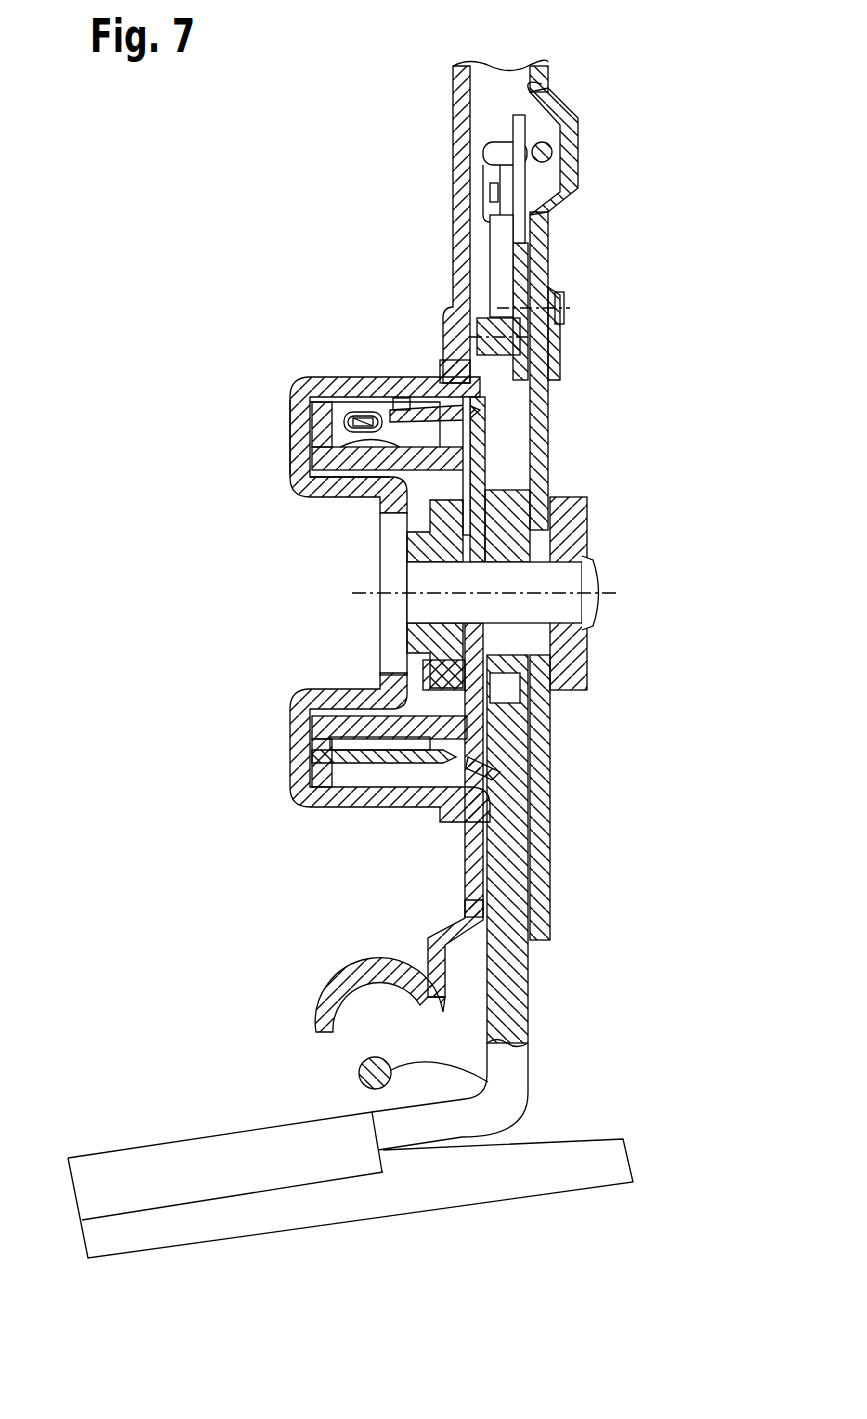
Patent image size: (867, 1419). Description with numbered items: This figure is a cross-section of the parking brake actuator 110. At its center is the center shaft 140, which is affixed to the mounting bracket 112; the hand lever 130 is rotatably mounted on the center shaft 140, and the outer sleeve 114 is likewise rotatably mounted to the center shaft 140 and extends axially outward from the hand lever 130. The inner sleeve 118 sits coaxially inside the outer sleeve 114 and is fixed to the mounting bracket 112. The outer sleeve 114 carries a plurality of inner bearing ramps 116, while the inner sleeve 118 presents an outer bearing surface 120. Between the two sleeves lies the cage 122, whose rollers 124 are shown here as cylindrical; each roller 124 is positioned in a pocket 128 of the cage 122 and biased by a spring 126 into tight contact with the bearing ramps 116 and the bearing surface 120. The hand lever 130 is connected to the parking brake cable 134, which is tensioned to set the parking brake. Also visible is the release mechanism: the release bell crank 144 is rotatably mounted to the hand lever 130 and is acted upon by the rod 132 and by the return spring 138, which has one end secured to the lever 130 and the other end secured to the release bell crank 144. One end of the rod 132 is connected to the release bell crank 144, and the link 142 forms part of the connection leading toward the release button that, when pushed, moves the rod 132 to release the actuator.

The parking brake actuator 110 is at (238, 698).
The mounting bracket 112 is at (160, 1172).
The outer sleeve 114 is at (333, 490).
The inner bearing ramps 116 is at (400, 405).
The inner sleeve 118 is at (318, 443).
The outer bearing surface 120 is at (318, 488).
The cage 122 is at (350, 757).
The rollers 124 is at (330, 392).
The spring 126 is at (357, 410).
The pocket 128 is at (340, 410).
The hand lever 130 is at (458, 216).
The rod 132 is at (556, 146).
The parking brake cable 134 is at (523, 1082).
The return spring 138 is at (487, 170).
The center shaft 140 is at (604, 582).
The link 142 is at (518, 262).
The release bell crank 144 is at (560, 92).